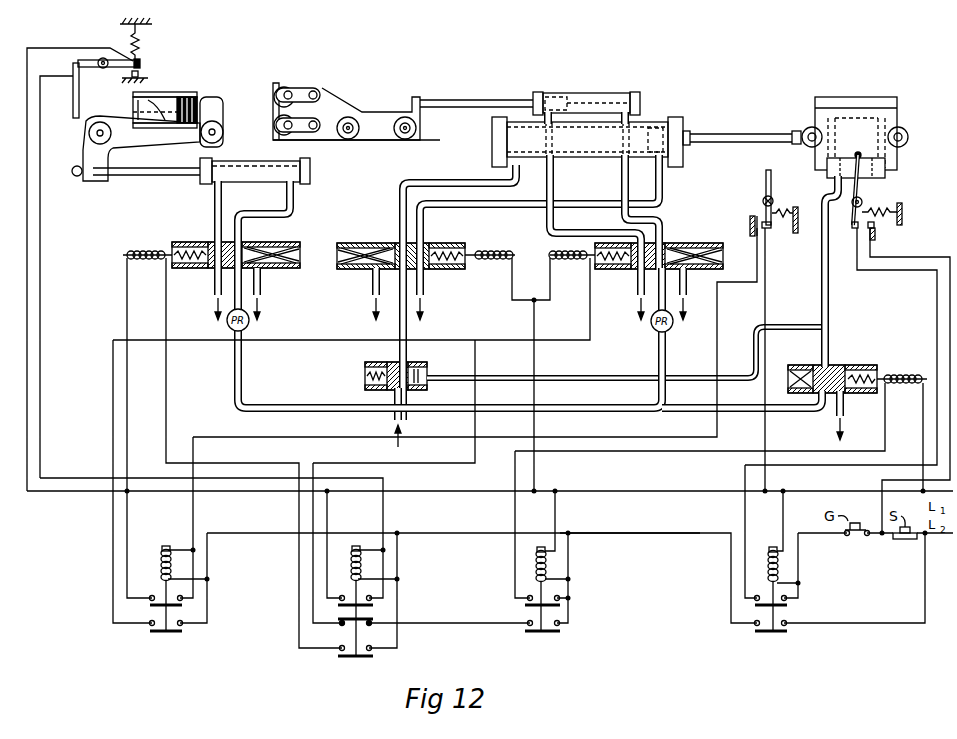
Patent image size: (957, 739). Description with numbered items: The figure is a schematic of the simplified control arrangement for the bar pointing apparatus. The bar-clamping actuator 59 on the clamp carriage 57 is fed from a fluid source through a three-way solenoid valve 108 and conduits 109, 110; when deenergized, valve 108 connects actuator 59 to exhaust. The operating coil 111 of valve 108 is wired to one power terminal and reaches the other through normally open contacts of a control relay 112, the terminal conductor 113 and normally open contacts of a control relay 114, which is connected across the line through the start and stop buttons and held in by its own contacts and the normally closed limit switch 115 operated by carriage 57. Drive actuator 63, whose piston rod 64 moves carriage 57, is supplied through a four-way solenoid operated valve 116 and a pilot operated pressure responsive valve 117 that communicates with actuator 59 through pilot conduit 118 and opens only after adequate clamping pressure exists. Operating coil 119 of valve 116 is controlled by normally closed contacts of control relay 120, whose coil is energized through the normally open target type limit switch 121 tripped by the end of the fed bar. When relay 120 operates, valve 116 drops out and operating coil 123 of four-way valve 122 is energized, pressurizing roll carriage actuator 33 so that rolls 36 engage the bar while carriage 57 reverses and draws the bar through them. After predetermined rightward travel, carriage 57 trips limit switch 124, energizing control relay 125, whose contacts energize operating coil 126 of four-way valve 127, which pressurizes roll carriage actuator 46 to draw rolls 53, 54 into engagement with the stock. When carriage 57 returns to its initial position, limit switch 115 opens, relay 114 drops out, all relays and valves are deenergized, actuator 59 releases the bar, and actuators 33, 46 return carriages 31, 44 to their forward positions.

The carriage 31 is at (218, 100).
The roll carriage actuator 33 is at (311, 172).
The rolls 36 is at (188, 97).
The carriage 44 is at (338, 100).
The roll carriage actuator 46 is at (604, 94).
The roll 53 is at (298, 84).
The roll 54 is at (280, 144).
The clamp carriage 57 is at (848, 97).
The bar-clamping actuator 59 is at (886, 174).
The drive actuator 63 is at (652, 122).
The piston rod 64 is at (735, 133).
The three-way solenoid valve 108 is at (852, 356).
The conduit 109 is at (786, 404).
The conduit 110 is at (580, 404).
The operating coil 111 is at (904, 375).
The control relay 112 is at (549, 566).
The terminal conductor 113 is at (618, 533).
The control relay 114 is at (781, 568).
The limit switch 115 is at (860, 192).
The four-way solenoid operated valve 116 is at (426, 249).
The pilot operated pressure responsive valve 117 is at (424, 365).
The pilot conduit 118 is at (578, 376).
The operating coil 119 is at (496, 251).
The control relay 120 is at (364, 565).
The target type limit switch 121 is at (79, 88).
The four-way valve 122 is at (288, 249).
The operating coil 123 is at (161, 251).
The limit switch 124 is at (764, 190).
The control relay 125 is at (155, 546).
The operating coil 126 is at (552, 248).
The four-way valve 127 is at (683, 249).